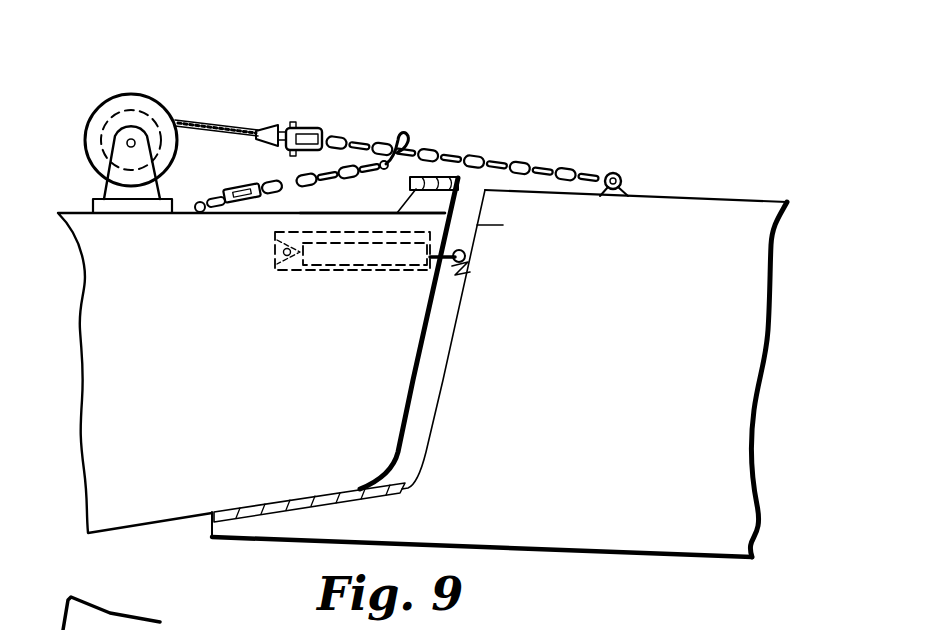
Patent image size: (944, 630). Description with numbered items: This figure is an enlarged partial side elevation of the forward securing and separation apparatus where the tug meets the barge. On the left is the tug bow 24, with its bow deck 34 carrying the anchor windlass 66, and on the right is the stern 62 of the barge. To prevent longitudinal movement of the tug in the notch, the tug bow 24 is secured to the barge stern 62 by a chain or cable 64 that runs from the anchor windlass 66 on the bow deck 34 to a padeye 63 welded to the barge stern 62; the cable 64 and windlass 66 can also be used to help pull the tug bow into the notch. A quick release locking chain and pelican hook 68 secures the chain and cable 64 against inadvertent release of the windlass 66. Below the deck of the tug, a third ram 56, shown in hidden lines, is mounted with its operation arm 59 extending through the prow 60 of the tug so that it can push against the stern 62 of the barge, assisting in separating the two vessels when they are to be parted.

The tug bow 24 is at (93, 294).
The bow deck 34 is at (318, 212).
The third ram 56 is at (350, 255).
The operation arm 59 is at (452, 270).
The prow 60 is at (425, 318).
The stern 62 is at (505, 231).
The padeye 63 is at (622, 173).
The chain or cable 64 is at (304, 130).
The anchor windlass 66 is at (140, 97).
The quick release locking chain and pelican hook 68 is at (410, 132).